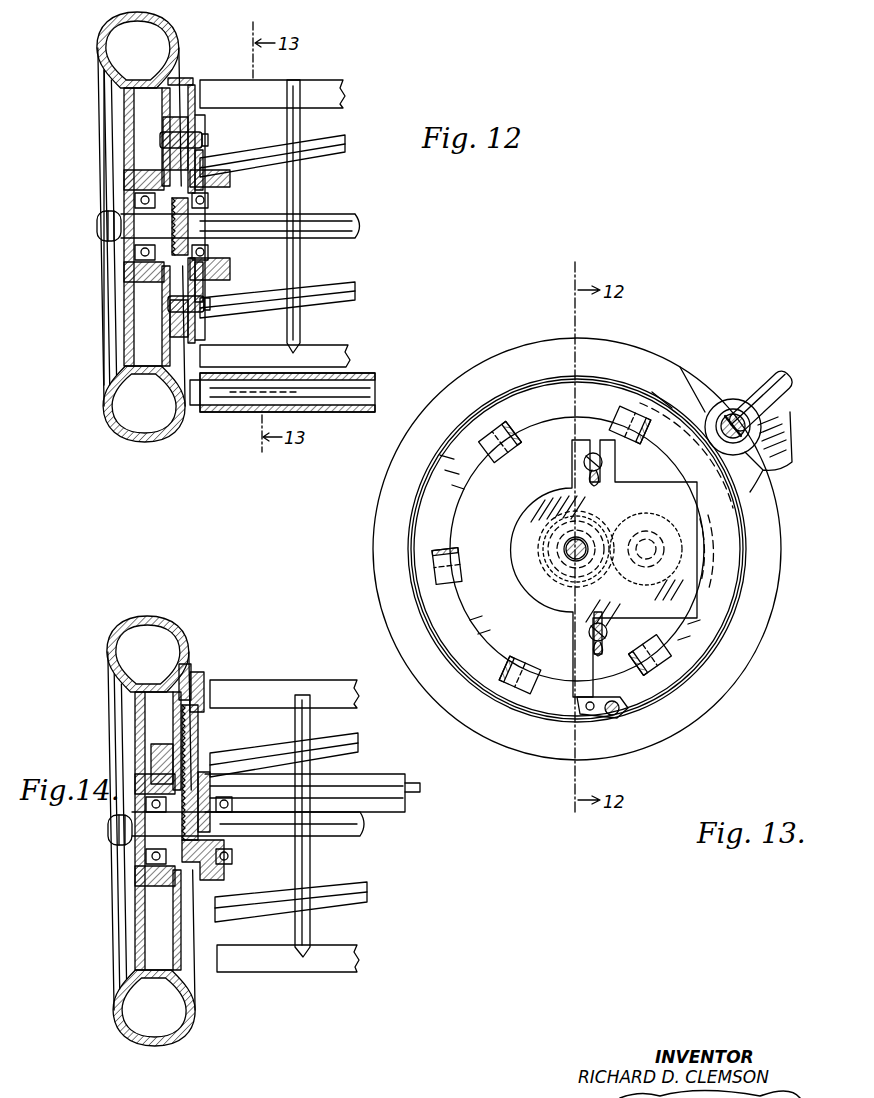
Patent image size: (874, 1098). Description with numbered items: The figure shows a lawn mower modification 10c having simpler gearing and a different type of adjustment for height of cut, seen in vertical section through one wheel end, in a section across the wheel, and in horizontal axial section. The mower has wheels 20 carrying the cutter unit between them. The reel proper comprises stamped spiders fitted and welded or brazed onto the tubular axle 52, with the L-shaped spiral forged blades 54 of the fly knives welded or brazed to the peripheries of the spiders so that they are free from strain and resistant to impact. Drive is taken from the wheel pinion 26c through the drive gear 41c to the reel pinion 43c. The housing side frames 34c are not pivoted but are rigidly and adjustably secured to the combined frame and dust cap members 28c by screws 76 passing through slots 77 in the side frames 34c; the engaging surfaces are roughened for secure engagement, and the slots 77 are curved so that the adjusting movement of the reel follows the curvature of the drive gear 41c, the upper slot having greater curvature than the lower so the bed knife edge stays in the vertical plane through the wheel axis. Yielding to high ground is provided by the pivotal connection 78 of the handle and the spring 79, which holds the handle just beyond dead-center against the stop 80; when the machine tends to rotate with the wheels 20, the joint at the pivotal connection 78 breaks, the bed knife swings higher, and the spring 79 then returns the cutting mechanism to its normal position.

In FIG. 12, the caster wheel assembly 10c is at (117, 134).
In FIG. 12, the wheels 20 is at (100, 412).
In FIG. 13, the wheels 20 is at (640, 350).
In FIG. 14, the wheels 20 is at (110, 1010).
In FIG. 12, the wheel pinion 26c is at (137, 292).
In FIG. 13, the wheel pinion 26c is at (552, 582).
In FIG. 14, the wheel pinion 26c is at (158, 890).
In FIG. 12, the combined frame and dust cap members 28c is at (193, 82).
In FIG. 13, the combined frame and dust cap members 28c is at (697, 675).
In FIG. 14, the combined frame and dust cap members 28c is at (206, 670).
In FIG. 12, the housing side frames 34c is at (200, 272).
In FIG. 13, the housing side frames 34c is at (532, 520).
In FIG. 14, the housing side frames 34c is at (226, 866).
In FIG. 13, the drive gear 41c is at (700, 562).
In FIG. 14, the drive gear 41c is at (204, 734).
In FIG. 12, the reel pinion 43c is at (203, 194).
In FIG. 13, the reel pinion 43c is at (555, 548).
In FIG. 14, the reel pinion 43c is at (210, 786).
In FIG. 12, the tubular axle 52 is at (364, 226).
In FIG. 13, the tubular axle 52 is at (568, 553).
In FIG. 14, the tubular axle 52 is at (347, 838).
In FIG. 12, the L-shaped spiral forged blades 54 is at (347, 85).
In FIG. 13, the L-shaped spiral forged blades 54 is at (490, 434).
In FIG. 14, the L-shaped spiral forged blades 54 is at (357, 693).
In FIG. 12, the screws 76 is at (208, 141).
In FIG. 13, the screws 76 is at (584, 462).
In FIG. 12, the slots 77 is at (200, 128).
In FIG. 13, the slots 77 is at (590, 478).
In FIG. 13, the pivotal connection 78 is at (712, 407).
In FIG. 13, the spring 79 is at (767, 372).
In FIG. 13, the stop 80 is at (723, 407).